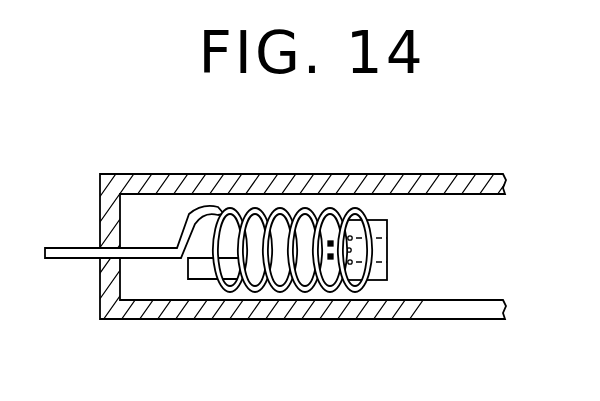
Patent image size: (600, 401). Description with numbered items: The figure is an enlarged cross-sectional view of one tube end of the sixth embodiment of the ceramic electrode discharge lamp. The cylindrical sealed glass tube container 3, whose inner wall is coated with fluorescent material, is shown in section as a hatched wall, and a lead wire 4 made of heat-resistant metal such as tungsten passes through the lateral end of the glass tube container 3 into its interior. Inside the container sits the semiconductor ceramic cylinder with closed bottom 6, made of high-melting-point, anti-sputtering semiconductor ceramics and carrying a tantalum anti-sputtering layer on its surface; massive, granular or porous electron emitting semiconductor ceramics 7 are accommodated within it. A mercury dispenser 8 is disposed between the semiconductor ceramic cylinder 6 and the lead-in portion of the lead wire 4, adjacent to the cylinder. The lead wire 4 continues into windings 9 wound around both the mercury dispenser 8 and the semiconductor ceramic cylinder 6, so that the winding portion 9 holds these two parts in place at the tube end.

The glass tube container 3 is at (357, 190).
The lead wire 4 is at (62, 260).
The semiconductor ceramic cylinder with closed bottom 6 is at (373, 272).
The electron emitting semiconductor ceramics 7 is at (353, 250).
The mercury dispenser 8 is at (203, 268).
The windings 9 is at (258, 206).